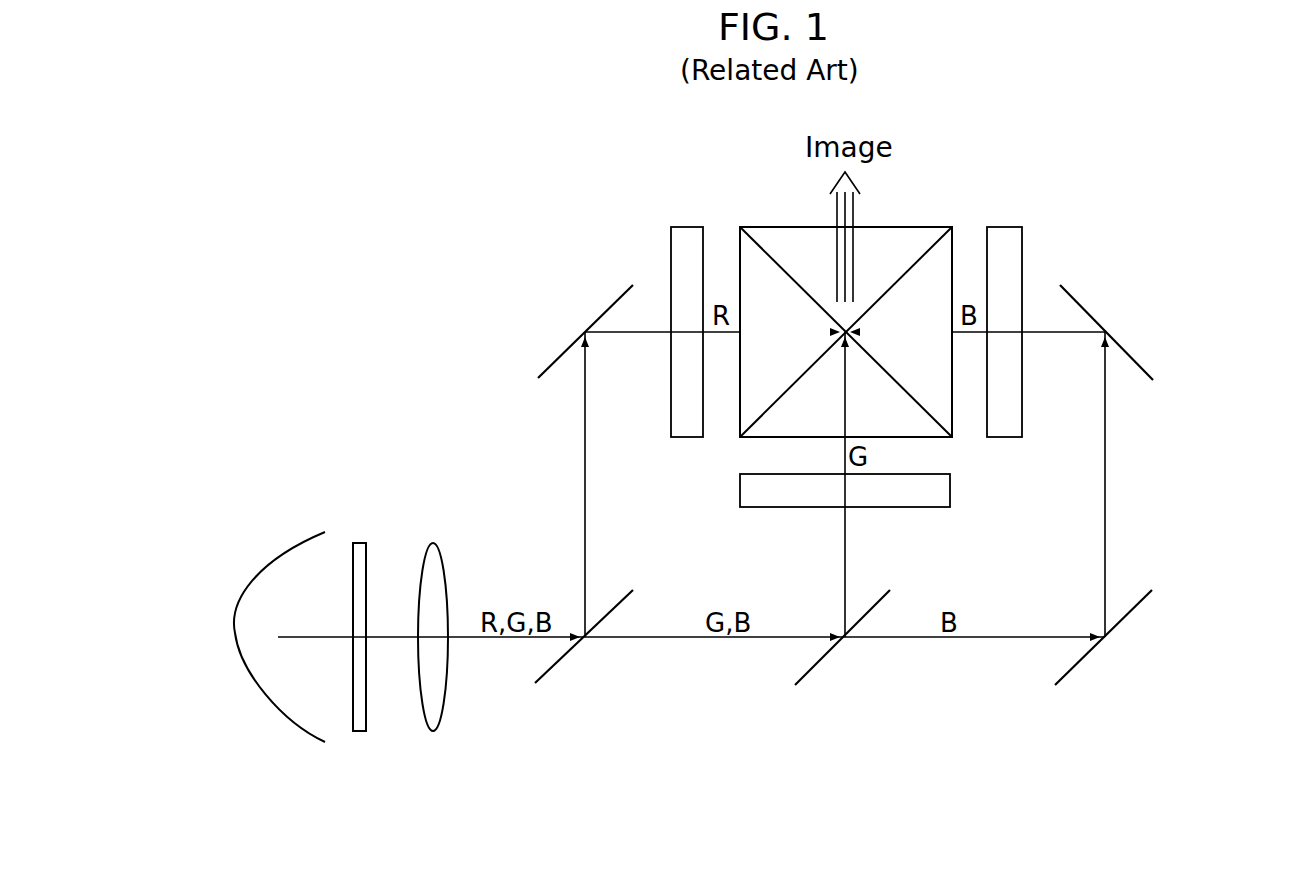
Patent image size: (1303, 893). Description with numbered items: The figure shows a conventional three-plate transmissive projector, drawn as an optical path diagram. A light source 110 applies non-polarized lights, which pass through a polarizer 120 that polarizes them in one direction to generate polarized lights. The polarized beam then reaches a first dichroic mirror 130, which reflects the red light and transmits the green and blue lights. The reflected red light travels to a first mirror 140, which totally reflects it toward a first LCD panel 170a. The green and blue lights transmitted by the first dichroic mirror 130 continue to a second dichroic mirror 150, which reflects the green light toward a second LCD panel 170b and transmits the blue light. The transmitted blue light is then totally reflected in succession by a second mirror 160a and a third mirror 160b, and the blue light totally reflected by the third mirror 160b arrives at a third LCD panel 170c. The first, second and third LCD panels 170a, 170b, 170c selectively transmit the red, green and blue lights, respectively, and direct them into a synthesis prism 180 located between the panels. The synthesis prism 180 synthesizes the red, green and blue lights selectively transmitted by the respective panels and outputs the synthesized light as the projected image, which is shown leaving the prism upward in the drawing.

The lamp reflector 110 is at (268, 705).
The filter plate 120 is at (360, 733).
The first dichroic mirror 130 is at (555, 668).
The reflecting mirror 140 is at (612, 302).
The second dichroic mirror 150 is at (822, 663).
The reflecting mirror 160a is at (1080, 663).
The reflecting mirror 160b is at (1135, 358).
The red LCD panel 170a is at (685, 225).
The green LCD panel 170b is at (950, 489).
The blue LCD panel 170c is at (1003, 225).
The dichroic prism 180 is at (900, 226).